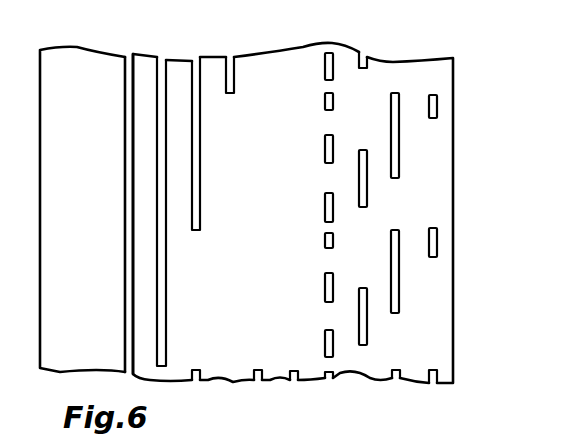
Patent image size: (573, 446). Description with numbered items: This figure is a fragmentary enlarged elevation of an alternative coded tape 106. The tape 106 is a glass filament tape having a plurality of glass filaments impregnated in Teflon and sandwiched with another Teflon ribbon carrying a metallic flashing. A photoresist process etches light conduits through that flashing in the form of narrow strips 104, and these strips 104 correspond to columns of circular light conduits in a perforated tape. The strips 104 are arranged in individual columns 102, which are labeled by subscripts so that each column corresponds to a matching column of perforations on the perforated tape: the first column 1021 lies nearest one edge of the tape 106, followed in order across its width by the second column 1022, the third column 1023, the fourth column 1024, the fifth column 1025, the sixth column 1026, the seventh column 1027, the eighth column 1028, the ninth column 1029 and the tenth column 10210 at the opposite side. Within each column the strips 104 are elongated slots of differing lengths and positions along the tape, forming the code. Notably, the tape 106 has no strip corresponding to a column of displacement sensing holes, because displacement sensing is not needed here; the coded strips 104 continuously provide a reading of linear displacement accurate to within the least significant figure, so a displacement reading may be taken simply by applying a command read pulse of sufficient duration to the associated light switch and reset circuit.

The columns of strips 102 is at (294, 212).
The column of strips 10210 is at (128, 57).
The column of strips 1029 is at (163, 56).
The column of strips 1028 is at (197, 60).
The column of strips 1027 is at (232, 56).
The column of strips 1026 is at (258, 381).
The column of strips 1025 is at (297, 381).
The column of strips 1024 is at (328, 53).
The column of strips 1023 is at (363, 56).
The column of strips 1022 is at (395, 93).
The column of strips 1021 is at (435, 97).
The strips 104 is at (383, 198).
The tape 106 is at (455, 275).